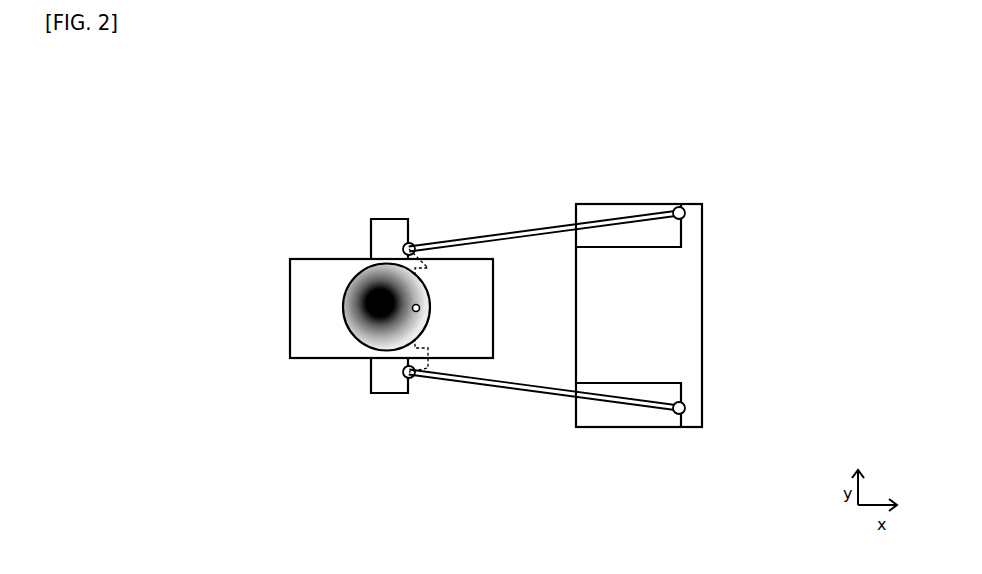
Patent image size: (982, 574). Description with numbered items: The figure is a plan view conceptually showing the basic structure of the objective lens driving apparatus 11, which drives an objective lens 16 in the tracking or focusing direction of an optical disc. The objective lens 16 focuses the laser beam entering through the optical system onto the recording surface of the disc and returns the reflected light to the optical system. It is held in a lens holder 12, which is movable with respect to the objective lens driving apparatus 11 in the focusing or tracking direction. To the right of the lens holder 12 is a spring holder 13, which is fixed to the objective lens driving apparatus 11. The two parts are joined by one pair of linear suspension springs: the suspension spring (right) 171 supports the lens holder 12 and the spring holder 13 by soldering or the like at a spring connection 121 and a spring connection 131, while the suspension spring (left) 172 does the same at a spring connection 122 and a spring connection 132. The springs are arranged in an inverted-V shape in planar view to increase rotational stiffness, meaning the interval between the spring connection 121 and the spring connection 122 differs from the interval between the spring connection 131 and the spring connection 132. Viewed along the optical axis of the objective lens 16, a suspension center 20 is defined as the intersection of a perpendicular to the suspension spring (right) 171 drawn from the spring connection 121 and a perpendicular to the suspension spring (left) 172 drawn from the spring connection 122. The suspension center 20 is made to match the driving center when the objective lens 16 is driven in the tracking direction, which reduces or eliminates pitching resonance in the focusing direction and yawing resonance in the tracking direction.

The objective lens driving apparatus 11 is at (251, 94).
The lens holder 12 is at (290, 281).
The spring connection 121 is at (403, 249).
The spring connection 122 is at (403, 373).
The spring holder 13 is at (688, 306).
The spring connection 131 is at (686, 212).
The spring connection 132 is at (686, 407).
The objective lens 16 is at (345, 318).
The suspension spring (right) 171 is at (446, 244).
The suspension spring (left) 172 is at (448, 381).
The suspension center 20 is at (412, 309).